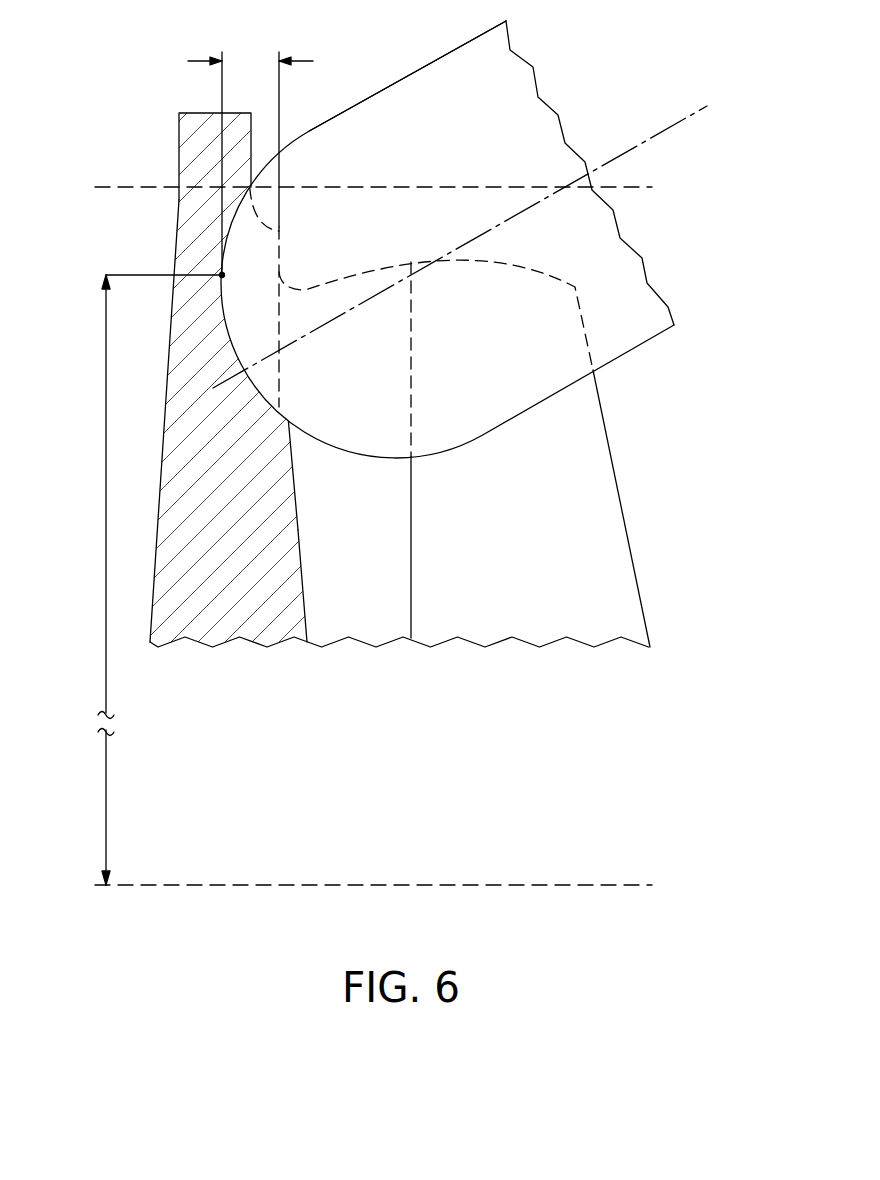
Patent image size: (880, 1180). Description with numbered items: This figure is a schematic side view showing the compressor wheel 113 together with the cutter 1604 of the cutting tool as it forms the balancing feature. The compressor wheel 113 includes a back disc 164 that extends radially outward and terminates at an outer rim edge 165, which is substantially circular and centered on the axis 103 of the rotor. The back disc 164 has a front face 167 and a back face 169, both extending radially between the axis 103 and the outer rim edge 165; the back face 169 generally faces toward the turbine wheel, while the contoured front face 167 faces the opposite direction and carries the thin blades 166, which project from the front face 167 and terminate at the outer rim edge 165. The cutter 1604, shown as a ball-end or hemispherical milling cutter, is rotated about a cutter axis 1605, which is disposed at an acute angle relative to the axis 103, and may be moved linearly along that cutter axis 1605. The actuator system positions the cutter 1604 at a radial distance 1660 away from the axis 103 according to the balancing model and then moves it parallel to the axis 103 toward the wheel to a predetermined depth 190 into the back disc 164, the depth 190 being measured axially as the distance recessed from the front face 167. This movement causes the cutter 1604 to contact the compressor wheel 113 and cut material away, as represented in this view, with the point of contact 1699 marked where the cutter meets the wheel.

The axis 103 is at (272, 885).
The compressor wheel 113 is at (615, 476).
The back disc 164 is at (290, 583).
The outer rim edge 165 is at (186, 113).
The blades 166 is at (624, 585).
The front face 167 is at (300, 516).
The back face 169 is at (157, 500).
The depth 190 is at (250, 162).
The cutter 1604 is at (400, 90).
The cutter axis 1605 is at (692, 110).
The radial distance 1660 is at (105, 580).
The tangent point 1699 is at (222, 275).